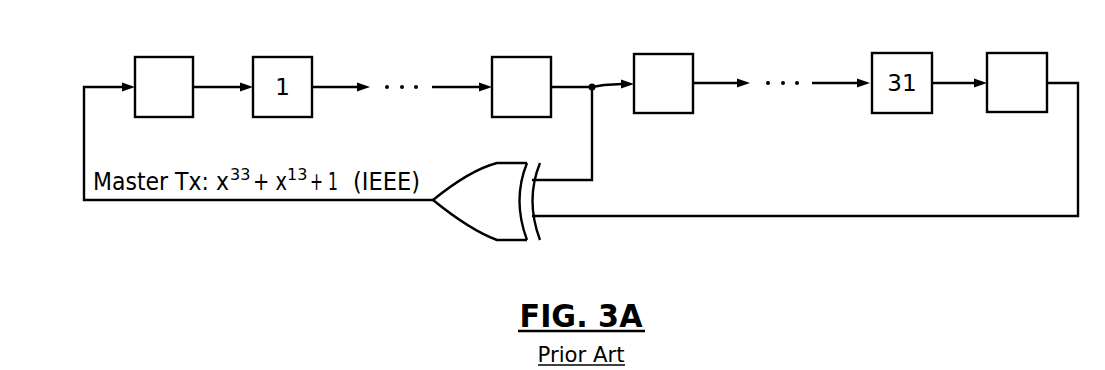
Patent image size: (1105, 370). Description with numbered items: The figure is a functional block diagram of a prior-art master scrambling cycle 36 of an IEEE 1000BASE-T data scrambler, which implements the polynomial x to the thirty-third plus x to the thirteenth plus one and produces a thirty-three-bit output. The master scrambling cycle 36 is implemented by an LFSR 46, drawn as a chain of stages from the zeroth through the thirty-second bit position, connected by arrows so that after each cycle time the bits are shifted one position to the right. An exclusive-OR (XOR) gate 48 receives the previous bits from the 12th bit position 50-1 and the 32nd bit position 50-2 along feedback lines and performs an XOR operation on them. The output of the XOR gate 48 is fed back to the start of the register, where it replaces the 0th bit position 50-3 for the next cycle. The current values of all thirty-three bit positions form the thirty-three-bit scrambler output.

The master scrambling cycle 36 is at (125, 232).
The LFSR 46 is at (692, 131).
The exclusive-OR (XOR) gate 48 is at (458, 225).
The 12th bit position 50-1 is at (531, 57).
The 32nd bit position 50-2 is at (1025, 53).
The 0th bit position 50-3 is at (173, 57).